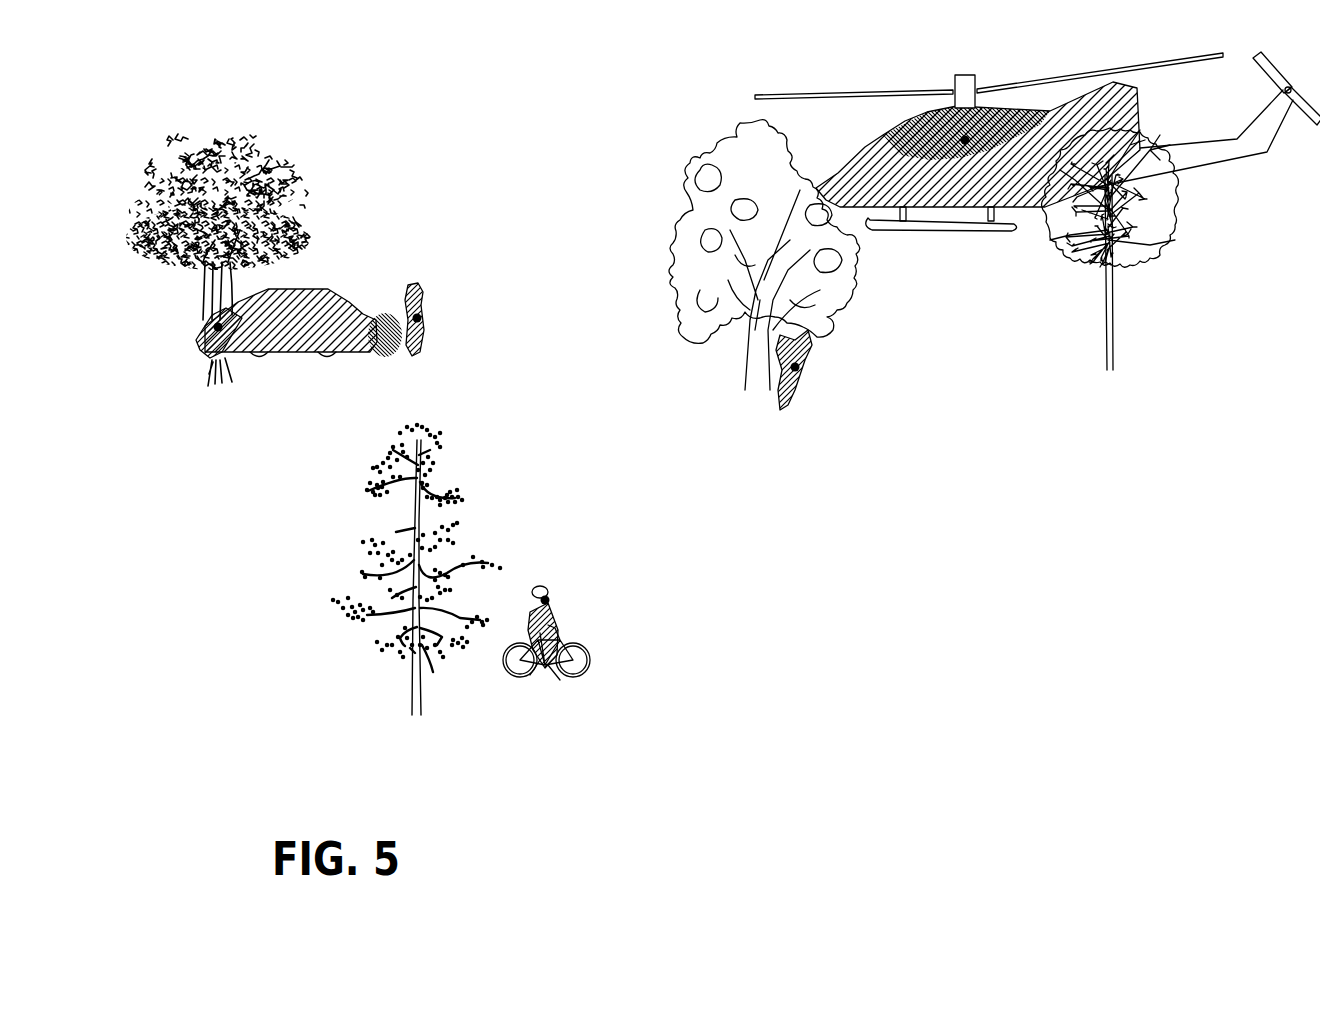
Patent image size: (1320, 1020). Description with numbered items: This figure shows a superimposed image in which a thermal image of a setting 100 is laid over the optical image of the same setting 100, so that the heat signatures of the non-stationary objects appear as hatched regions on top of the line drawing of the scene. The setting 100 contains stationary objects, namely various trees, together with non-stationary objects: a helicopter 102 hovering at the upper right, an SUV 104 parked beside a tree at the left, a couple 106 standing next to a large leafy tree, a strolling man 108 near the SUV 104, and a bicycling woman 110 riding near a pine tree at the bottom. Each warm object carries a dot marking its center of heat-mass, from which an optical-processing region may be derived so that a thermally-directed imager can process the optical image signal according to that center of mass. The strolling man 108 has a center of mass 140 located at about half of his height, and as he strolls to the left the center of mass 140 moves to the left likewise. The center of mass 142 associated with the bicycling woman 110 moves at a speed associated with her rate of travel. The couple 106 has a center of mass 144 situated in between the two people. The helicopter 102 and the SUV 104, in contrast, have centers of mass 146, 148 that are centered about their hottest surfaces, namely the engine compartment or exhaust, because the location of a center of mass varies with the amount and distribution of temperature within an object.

The setting 100 is at (147, 107).
The helicopter 102 is at (872, 143).
The SUV 104 is at (327, 363).
The couple 106 is at (790, 405).
The strolling man 108 is at (410, 358).
The bicycling woman 110 is at (548, 676).
The center of mass 140 is at (421, 318).
The center of mass 142 is at (549, 598).
The center of mass 144 is at (799, 367).
The center of mass 146 is at (200, 352).
The center of mass 148 is at (963, 138).